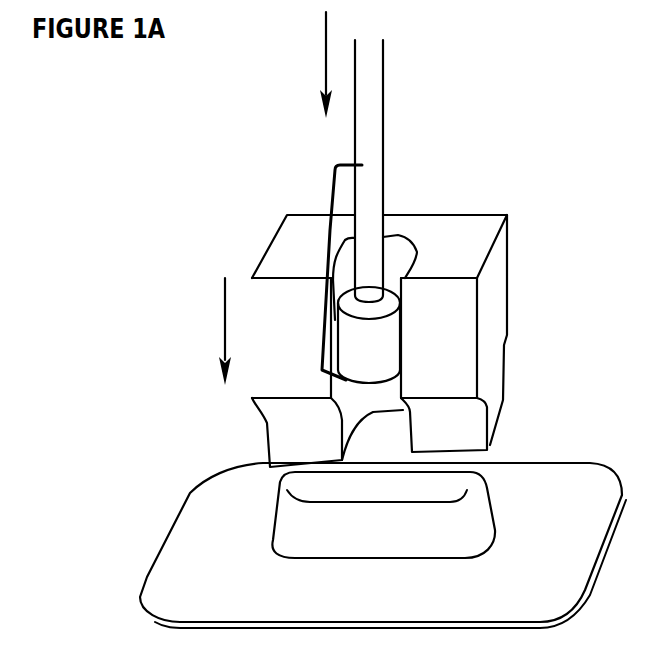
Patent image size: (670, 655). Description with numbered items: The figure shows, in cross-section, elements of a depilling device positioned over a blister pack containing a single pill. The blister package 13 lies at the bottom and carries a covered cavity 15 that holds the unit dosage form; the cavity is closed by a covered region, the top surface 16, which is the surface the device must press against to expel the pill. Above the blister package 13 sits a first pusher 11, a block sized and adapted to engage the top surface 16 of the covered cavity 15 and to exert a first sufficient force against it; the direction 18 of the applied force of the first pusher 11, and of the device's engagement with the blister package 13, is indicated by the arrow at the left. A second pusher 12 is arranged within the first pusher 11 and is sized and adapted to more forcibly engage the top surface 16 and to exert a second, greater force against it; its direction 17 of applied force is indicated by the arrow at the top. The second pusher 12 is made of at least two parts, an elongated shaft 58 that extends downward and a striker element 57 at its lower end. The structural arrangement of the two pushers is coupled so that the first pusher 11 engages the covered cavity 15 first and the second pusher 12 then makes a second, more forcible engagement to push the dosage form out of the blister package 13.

The first pusher 11 is at (379, 341).
The second pusher 12 is at (330, 253).
The blister package 13 is at (383, 545).
The covered cavity 15 is at (383, 515).
The top surface 16 is at (377, 484).
The direction of applied force of the second pusher 17 is at (310, 65).
The direction of applied force of the first pusher 18 is at (207, 331).
The striker element 57 is at (369, 335).
The elongated shaft 58 is at (375, 180).